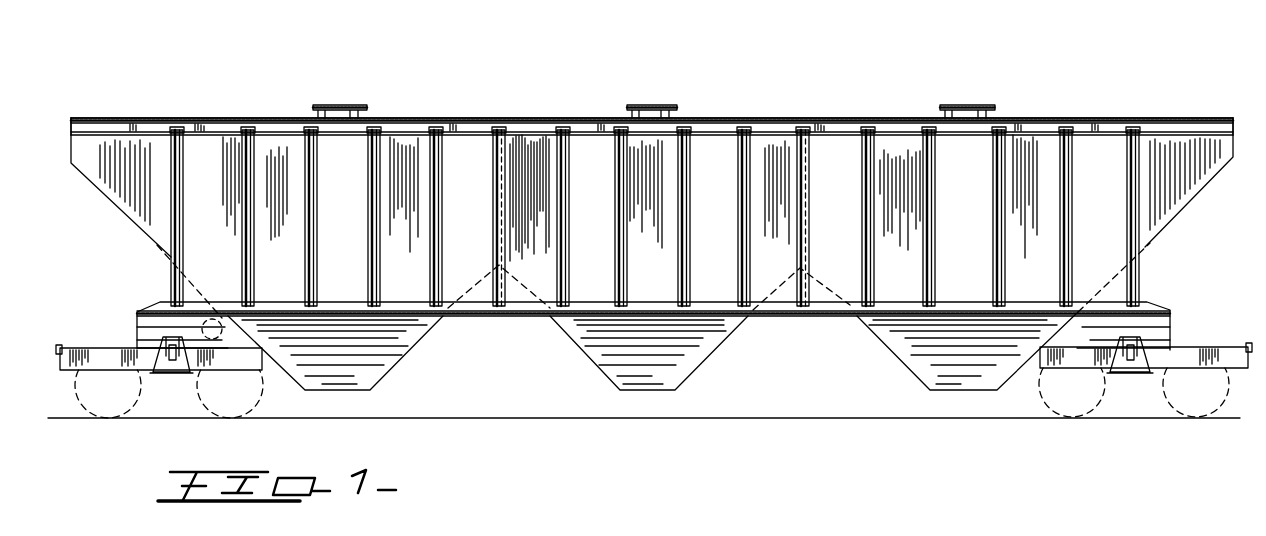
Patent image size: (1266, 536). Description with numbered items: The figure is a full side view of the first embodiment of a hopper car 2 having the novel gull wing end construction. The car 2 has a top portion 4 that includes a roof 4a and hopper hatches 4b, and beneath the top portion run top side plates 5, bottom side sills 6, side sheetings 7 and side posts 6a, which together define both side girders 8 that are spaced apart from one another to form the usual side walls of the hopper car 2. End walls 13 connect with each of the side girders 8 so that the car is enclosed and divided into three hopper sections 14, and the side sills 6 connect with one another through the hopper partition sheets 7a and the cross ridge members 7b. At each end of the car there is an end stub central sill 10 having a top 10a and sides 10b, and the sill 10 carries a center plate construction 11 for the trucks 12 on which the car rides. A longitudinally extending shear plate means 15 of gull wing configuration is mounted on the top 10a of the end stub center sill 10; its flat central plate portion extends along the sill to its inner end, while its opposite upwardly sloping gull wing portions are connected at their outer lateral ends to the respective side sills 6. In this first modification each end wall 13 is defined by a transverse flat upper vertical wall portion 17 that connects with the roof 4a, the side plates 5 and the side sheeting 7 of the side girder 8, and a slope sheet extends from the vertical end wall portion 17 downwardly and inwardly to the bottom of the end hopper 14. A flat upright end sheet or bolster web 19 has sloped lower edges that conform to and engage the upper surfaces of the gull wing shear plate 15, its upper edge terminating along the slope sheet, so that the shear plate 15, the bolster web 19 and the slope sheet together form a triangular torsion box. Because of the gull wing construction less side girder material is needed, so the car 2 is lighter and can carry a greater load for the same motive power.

The hopper car 2 is at (722, 60).
The top portion 4 is at (792, 121).
The roof 4a is at (420, 121).
The hopper hatches 4b is at (350, 106).
The top side plates 5 is at (522, 133).
The bottom side sills 6 is at (522, 307).
The side posts 6a is at (310, 155).
The side sheetings 7 is at (717, 157).
The hopper partition sheets 7a is at (493, 157).
The cross ridge members 7b is at (508, 286).
The side girders 8 is at (1090, 153).
The end stub central sill 10 is at (60, 363).
The top plate of end stub center sill 10a is at (113, 350).
The sides of end stub center sill 10b is at (87, 356).
The center plate construction 11 is at (172, 377).
The trucks 12 is at (192, 377).
The end walls 13 is at (66, 144).
The hopper sections 14 is at (387, 355).
The shear plate means 15 is at (137, 333).
The upper vertical wall portion 17 is at (71, 121).
The bolster web 19 is at (1148, 270).